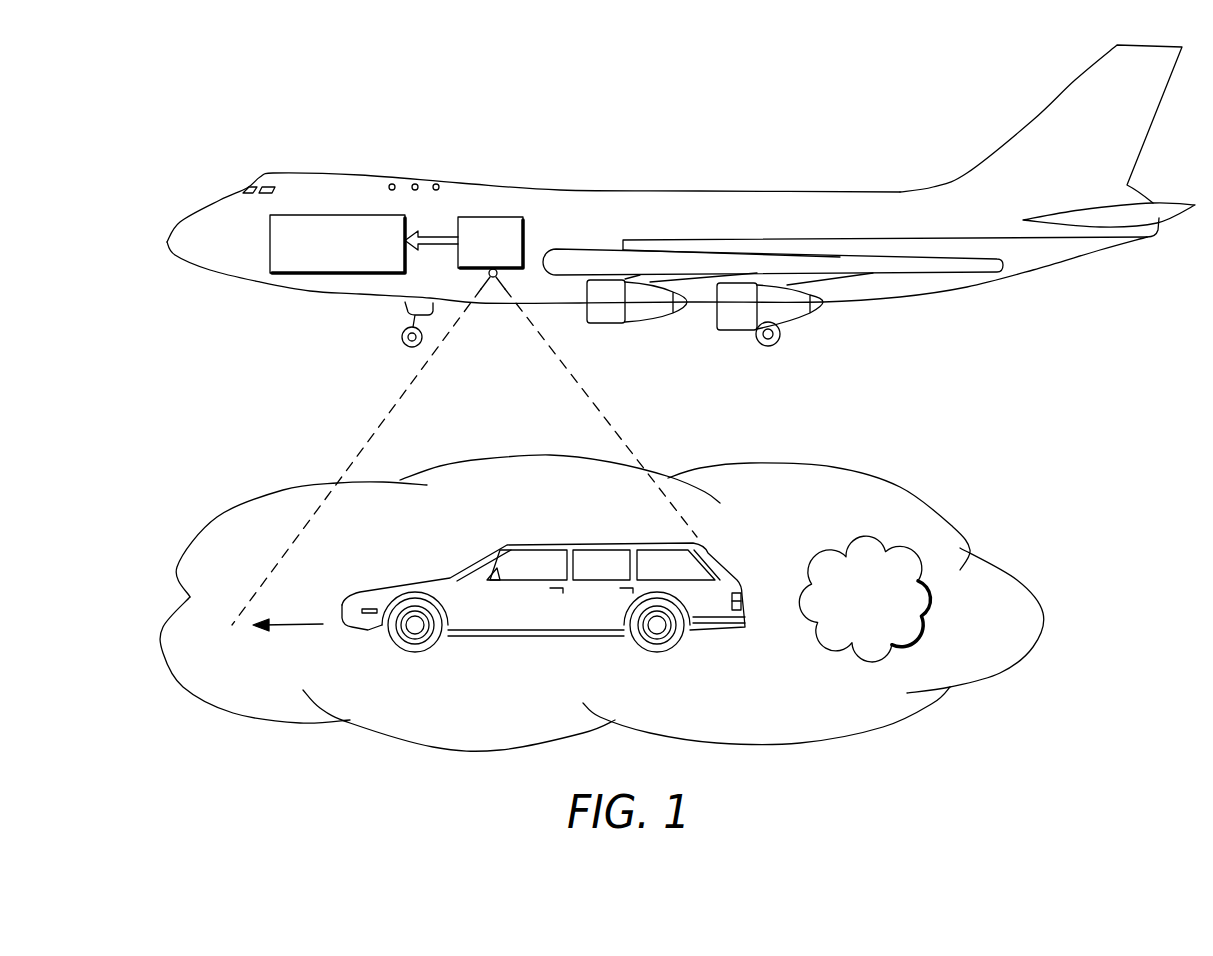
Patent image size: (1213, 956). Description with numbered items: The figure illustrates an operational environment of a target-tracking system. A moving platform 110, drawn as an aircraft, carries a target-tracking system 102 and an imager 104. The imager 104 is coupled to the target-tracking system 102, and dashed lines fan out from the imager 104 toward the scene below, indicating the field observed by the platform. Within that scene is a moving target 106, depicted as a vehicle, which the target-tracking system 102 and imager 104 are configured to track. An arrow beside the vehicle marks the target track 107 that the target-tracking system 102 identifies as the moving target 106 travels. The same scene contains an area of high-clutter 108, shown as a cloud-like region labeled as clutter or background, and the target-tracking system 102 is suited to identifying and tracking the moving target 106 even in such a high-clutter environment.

The target-tracking system 102 is at (270, 238).
The imager 104 is at (506, 216).
The moving target 106 is at (600, 540).
The target track 107 is at (313, 621).
The high-clutter 108 is at (857, 541).
The moving platform 110 is at (677, 187).